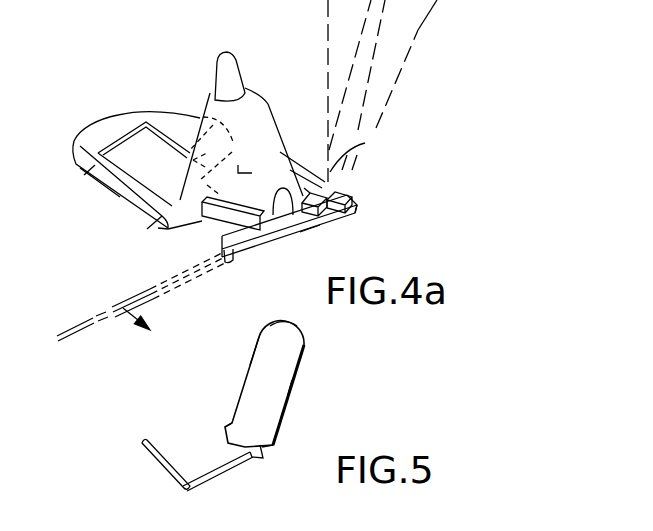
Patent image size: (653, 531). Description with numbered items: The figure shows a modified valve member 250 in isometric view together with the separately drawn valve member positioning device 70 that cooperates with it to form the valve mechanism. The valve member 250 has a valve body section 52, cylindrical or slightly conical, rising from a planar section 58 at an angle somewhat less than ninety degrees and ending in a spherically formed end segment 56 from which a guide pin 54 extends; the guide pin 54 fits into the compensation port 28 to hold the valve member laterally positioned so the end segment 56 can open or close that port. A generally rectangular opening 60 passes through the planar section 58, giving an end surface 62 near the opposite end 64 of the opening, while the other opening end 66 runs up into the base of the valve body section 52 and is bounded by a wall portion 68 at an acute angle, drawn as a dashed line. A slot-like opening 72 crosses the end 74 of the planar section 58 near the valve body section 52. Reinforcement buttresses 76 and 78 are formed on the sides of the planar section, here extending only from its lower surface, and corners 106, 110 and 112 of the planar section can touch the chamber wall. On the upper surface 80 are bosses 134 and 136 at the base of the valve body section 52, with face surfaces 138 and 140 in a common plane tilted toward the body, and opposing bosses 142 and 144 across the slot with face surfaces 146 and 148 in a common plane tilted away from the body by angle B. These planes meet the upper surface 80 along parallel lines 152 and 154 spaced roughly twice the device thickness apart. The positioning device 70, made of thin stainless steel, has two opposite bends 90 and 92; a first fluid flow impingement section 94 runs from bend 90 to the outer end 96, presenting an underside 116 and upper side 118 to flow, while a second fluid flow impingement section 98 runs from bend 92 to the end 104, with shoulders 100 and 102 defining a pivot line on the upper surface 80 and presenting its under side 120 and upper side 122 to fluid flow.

In FIG. 4a, the valve body section 52 is at (200, 117).
In FIG. 4a, the guide pin 54 is at (232, 58).
In FIG. 4a, the spherically formed end segment 56 is at (209, 93).
In FIG. 4a, the planar section 58 is at (94, 197).
In FIG. 4a, the rectangular opening 60 is at (127, 133).
In FIG. 4a, the end surface 62 is at (97, 118).
In FIG. 4a, the opposite end of opening 64 is at (100, 148).
In FIG. 4a, the other opening end 66 is at (187, 177).
In FIG. 4a, the wall portion 68 is at (206, 103).
In FIG. 5, the valve member positioning device 70 is at (232, 358).
In FIG. 4a, the slot-like opening 72 is at (313, 233).
In FIG. 4a, the end of planar section 74 is at (312, 237).
In FIG. 4a, the reinforcement buttress 76 is at (175, 153).
In FIG. 4a, the reinforcement buttress 78 is at (147, 229).
In FIG. 4a, the upper surface 80 is at (95, 165).
In FIG. 5, the first bend 90 is at (197, 490).
In FIG. 5, the second bend 92 is at (230, 435).
In FIG. 5, the first fluid flow impingement section 94 is at (178, 490).
In FIG. 5, the outer end 96 is at (144, 443).
In FIG. 5, the second fluid flow impingement section 98 is at (285, 388).
In FIG. 5, the shoulder 100 is at (228, 426).
In FIG. 5, the shoulder 102 is at (277, 447).
In FIG. 5, the end of device 104 is at (297, 326).
In FIG. 4a, the corner 106 is at (158, 228).
In FIG. 4a, the corner 110 is at (270, 257).
In FIG. 4a, the corner 112 is at (353, 203).
In FIG. 5, the underside of first impingement section 116 is at (155, 462).
In FIG. 5, the upper side of first impingement section 118 is at (168, 455).
In FIG. 5, the under side of second impingement section 120 is at (305, 363).
In FIG. 5, the upper side of second impingement section 122 is at (255, 358).
In FIG. 4a, the boss 134 is at (304, 188).
In FIG. 4a, the boss 136 is at (139, 290).
In FIG. 4a, the face surface 138 is at (365, 143).
In FIG. 4a, the face surface 140 is at (252, 185).
In FIG. 4a, the boss 142 is at (357, 215).
In FIG. 4a, the boss 144 is at (298, 243).
In FIG. 4a, the face surface 146 is at (353, 172).
In FIG. 4a, the face surface 148 is at (234, 258).
In FIG. 4a, the line of intersection 152 is at (97, 295).
In FIG. 4a, the line of intersection 154 is at (47, 295).
In FIG. 4a, the valve member 250 is at (76, 217).
In FIG. 5, the compensation port 28 is at (262, 457).
In FIG. 4a, the angle B is at (418, 9).